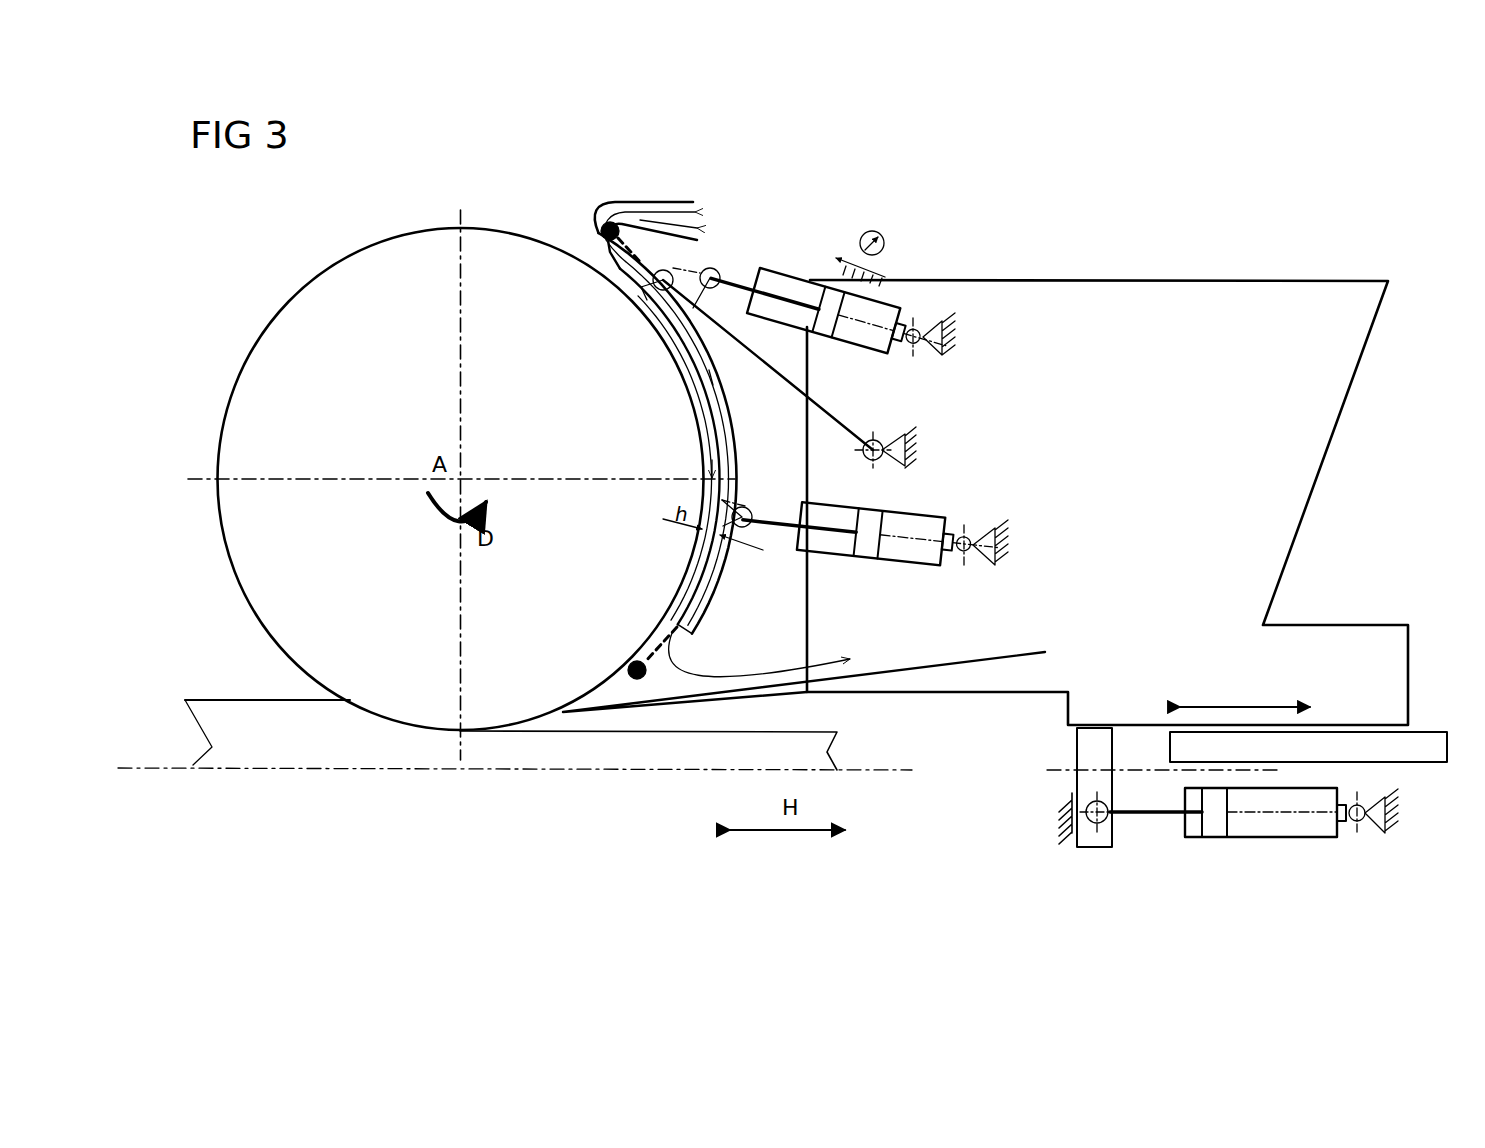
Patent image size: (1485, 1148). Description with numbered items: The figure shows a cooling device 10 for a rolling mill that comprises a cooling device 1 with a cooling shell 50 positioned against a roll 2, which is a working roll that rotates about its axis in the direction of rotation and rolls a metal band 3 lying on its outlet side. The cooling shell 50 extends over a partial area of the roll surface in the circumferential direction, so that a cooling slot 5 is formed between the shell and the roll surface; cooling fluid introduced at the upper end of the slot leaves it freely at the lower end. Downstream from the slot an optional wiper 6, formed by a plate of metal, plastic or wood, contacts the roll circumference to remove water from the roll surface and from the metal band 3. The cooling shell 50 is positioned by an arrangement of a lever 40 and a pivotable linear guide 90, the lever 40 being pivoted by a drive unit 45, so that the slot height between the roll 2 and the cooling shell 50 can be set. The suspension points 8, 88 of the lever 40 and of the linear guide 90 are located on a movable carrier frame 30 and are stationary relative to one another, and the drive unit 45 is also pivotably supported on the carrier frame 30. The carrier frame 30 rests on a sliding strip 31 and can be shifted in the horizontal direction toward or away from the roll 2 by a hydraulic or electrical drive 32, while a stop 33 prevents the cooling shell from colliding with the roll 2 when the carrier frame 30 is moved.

The cooling device 1 is at (829, 247).
The roll 2 is at (313, 318).
The metal band 3 is at (268, 725).
The cooling slot 5 is at (697, 401).
The cooling shell 50 is at (718, 440).
The wiper 6 is at (910, 667).
The suspension point 8 is at (885, 445).
The cooling device 10 is at (1029, 219).
The carrier frame 30 is at (1158, 281).
The sliding strip 31 is at (1417, 731).
The drive 32 is at (1283, 839).
The stop 33 is at (1063, 832).
The lever 40 is at (803, 393).
The drive unit 45 is at (783, 270).
The suspension point 88 is at (988, 528).
The linear guide 90 is at (860, 568).